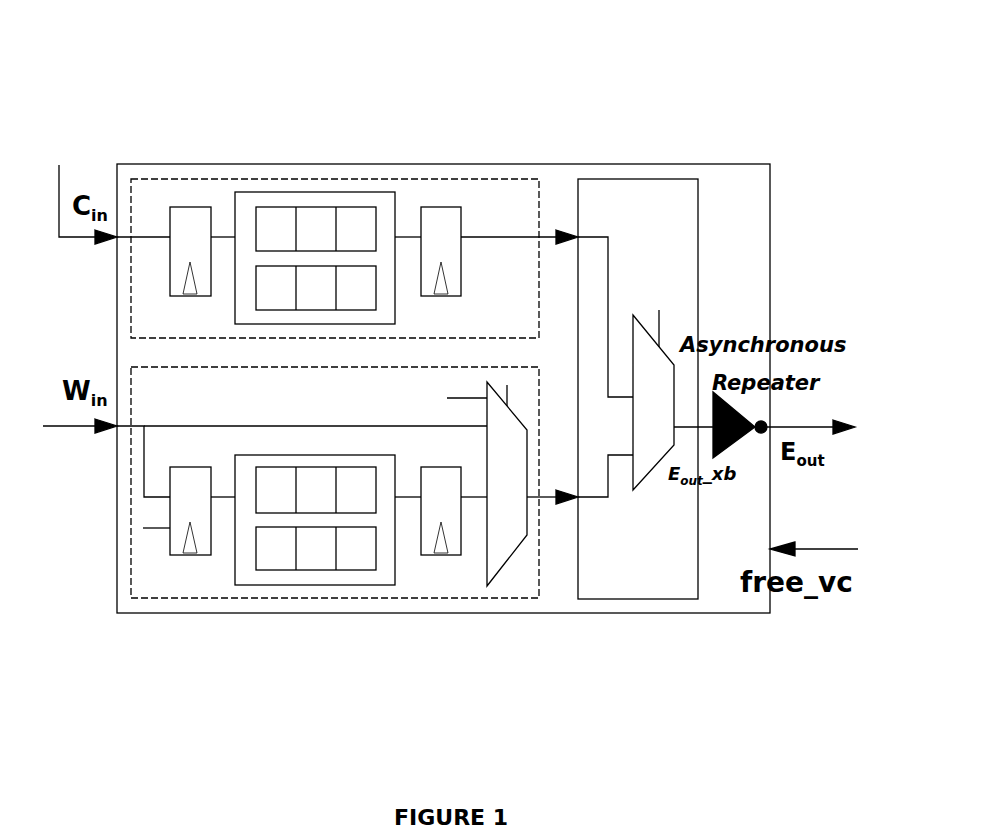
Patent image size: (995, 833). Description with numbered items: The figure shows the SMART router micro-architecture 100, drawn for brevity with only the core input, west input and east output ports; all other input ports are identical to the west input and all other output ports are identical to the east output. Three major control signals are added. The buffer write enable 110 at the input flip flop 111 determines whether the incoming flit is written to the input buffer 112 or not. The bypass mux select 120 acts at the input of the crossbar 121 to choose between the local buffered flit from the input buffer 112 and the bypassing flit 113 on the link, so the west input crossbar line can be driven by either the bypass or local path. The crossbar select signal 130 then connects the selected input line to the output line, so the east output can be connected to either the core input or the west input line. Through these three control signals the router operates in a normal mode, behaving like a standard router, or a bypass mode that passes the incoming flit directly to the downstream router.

The SMART router micro-architecture 100 is at (466, 97).
The buffer write enable 110 is at (289, 530).
The input flip flop 111 is at (188, 557).
The input buffer 112 is at (318, 578).
The bypassing flit 113 is at (300, 398).
The bypass mux select 120 is at (517, 345).
The crossbar 121 is at (503, 565).
The crossbar select signal 130 is at (668, 275).